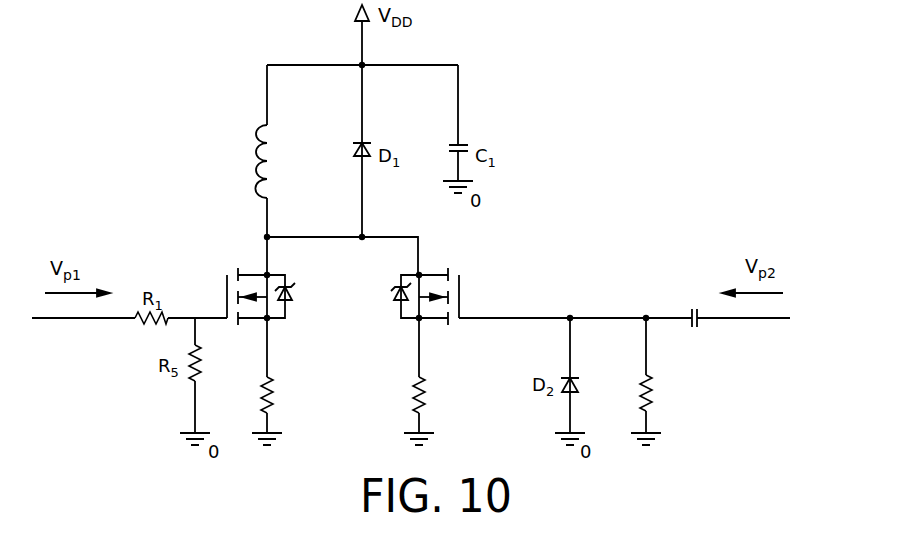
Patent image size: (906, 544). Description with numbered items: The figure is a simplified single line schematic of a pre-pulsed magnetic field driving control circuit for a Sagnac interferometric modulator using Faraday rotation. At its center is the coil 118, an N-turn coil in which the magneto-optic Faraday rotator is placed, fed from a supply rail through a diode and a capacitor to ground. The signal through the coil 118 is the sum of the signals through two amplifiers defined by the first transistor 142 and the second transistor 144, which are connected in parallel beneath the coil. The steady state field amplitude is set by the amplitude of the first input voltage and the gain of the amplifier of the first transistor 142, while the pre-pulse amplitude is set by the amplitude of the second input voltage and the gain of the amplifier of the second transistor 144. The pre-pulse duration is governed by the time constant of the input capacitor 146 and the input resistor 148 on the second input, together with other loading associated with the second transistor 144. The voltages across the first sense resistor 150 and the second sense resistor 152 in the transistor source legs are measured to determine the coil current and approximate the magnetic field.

The coil 118 is at (256, 133).
The transistor Q1 142 is at (254, 268).
The transistor Q2 144 is at (434, 268).
The capacitor C2 146 is at (700, 326).
The resistor R4 148 is at (652, 407).
The resistor R2 150 is at (263, 377).
The resistor R3 152 is at (415, 377).